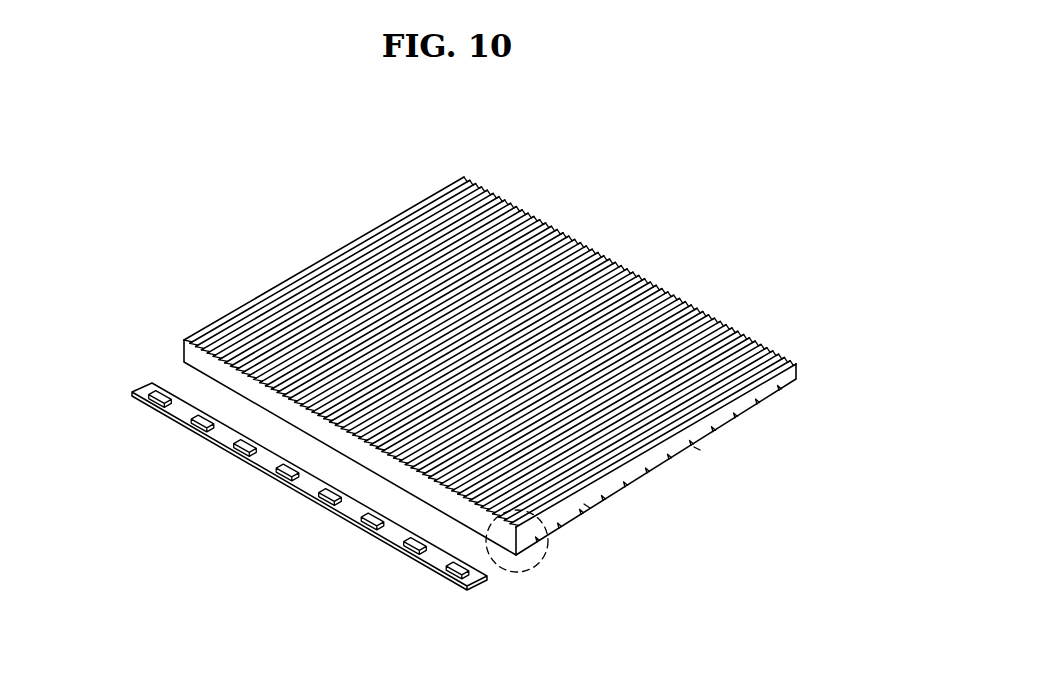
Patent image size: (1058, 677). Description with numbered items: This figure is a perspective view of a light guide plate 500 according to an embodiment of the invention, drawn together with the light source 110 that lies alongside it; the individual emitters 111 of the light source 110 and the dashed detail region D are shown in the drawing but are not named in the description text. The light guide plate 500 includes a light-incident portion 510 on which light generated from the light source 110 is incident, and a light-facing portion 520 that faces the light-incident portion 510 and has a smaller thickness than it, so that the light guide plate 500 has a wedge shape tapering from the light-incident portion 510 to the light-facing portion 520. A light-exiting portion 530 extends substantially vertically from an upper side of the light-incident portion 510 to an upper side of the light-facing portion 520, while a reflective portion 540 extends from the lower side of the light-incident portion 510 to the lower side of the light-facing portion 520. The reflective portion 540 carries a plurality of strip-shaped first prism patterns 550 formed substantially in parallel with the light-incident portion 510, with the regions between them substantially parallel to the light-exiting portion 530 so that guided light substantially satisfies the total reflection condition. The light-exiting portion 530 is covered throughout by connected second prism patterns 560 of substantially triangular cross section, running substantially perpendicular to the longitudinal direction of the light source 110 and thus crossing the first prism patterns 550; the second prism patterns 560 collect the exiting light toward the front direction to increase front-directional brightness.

The light guide plate 500 is at (492, 381).
The light-incident portion 510 is at (183, 352).
The light-facing portion 520 is at (798, 370).
The light-exiting portion 530 is at (660, 443).
The reflective portion 540 is at (638, 482).
The first prism patterns 550 is at (580, 515).
The second prism patterns 560 is at (466, 176).
The light source 110 is at (282, 458).
The light emitting diodes 111 is at (155, 382).
The enlarged detail region D is at (518, 572).